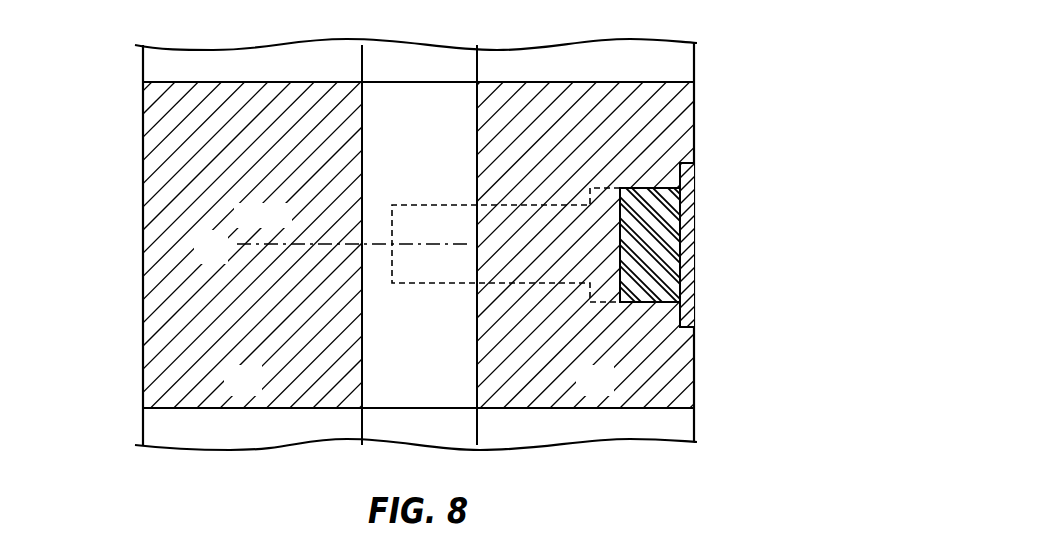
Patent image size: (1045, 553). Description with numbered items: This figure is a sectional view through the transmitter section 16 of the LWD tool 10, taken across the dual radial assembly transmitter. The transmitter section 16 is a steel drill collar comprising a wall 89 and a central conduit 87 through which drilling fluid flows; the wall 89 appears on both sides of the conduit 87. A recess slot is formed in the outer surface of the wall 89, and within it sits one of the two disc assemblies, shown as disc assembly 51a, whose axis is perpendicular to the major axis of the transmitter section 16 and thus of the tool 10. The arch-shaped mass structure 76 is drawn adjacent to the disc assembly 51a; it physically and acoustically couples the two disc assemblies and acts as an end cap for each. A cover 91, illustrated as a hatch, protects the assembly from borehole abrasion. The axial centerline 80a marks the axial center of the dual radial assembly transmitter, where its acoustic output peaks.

The LWD tool 10 is at (712, 100).
The transmitter section 16 is at (160, 229).
The disc assembly 51a is at (464, 200).
The arch-shaped mass structure 76 is at (607, 187).
The axial centerline 80a is at (327, 243).
The conduit 87 is at (433, 393).
The wall 89 is at (257, 393).
The cover 91 is at (694, 190).